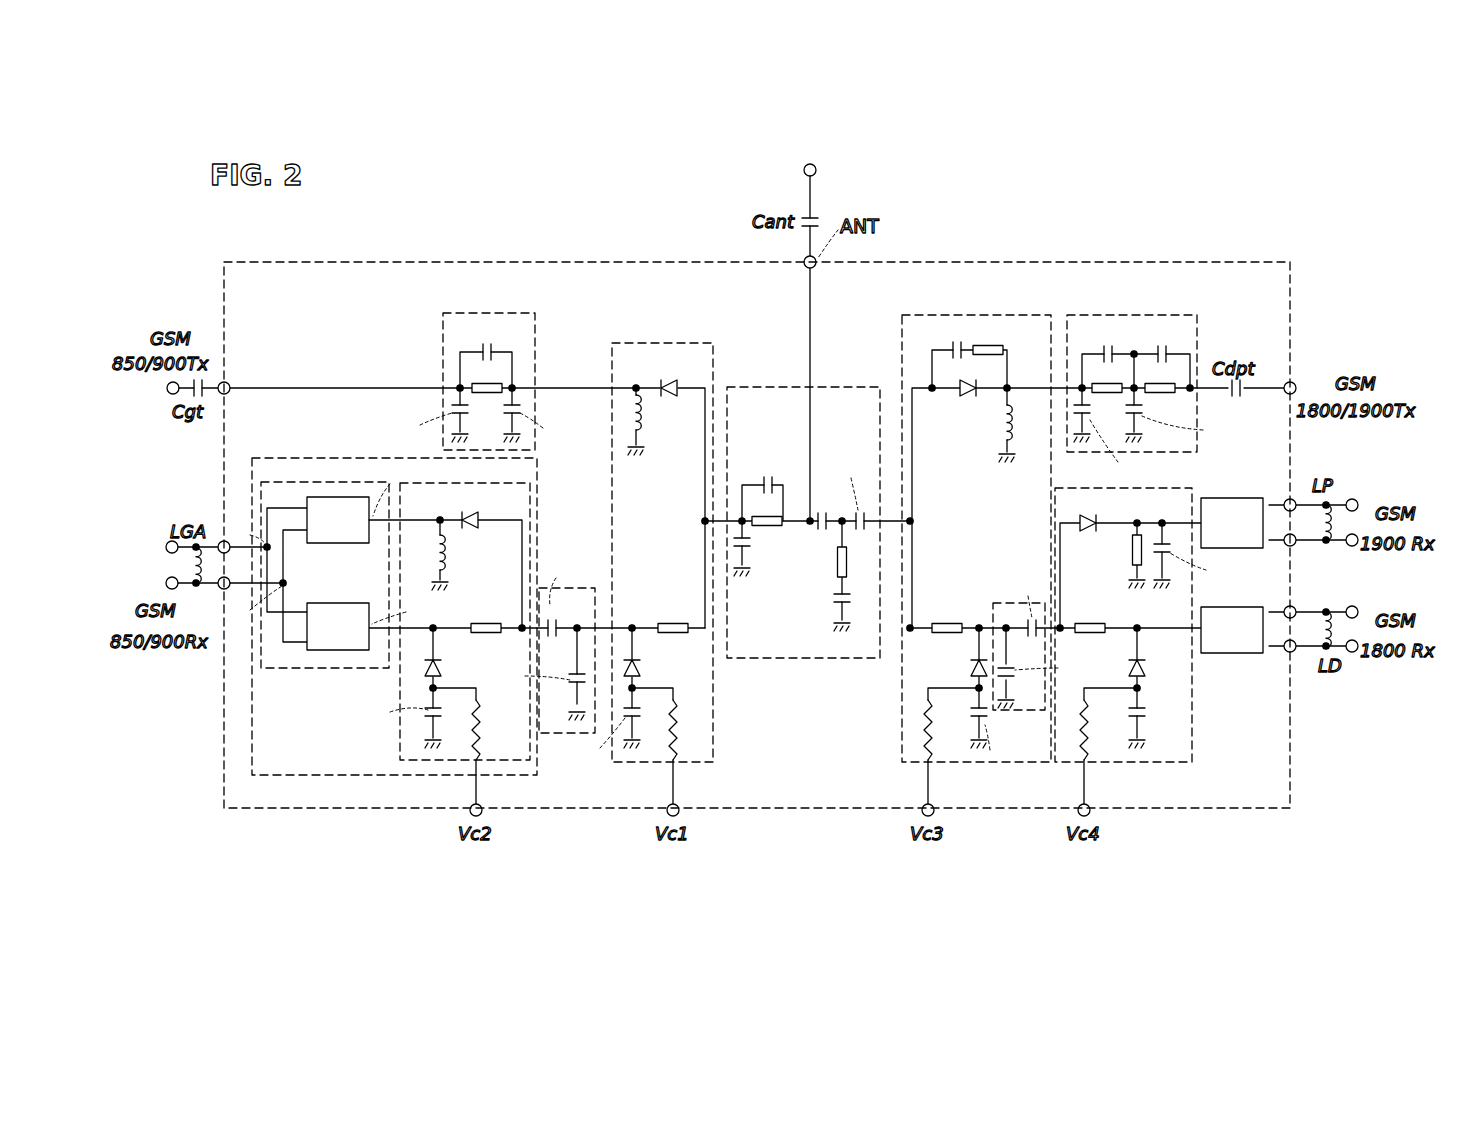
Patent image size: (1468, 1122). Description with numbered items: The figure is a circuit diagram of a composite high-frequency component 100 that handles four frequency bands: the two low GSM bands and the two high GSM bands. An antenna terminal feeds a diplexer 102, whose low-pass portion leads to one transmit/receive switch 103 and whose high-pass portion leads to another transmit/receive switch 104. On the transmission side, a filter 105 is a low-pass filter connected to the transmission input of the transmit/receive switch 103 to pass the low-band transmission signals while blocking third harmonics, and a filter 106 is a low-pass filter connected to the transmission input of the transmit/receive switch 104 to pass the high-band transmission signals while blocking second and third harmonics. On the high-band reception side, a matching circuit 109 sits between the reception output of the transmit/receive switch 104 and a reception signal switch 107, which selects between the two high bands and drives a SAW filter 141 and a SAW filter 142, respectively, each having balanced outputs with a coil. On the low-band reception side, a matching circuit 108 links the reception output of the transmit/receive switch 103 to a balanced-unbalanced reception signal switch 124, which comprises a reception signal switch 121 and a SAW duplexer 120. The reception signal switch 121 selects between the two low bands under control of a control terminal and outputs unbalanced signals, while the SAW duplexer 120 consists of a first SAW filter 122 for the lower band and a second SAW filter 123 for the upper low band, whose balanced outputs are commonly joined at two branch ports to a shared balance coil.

The composite high-frequency component 100 is at (1287, 262).
The diplexer 102 is at (820, 387).
The transmit/receive switch 103 is at (713, 346).
The transmit/receive switch 104 is at (1051, 317).
The filter 105 is at (535, 316).
The filter 106 is at (1190, 317).
The reception signal switch 107 is at (1192, 763).
The matching circuit 108 is at (595, 588).
The matching circuit 109 is at (1040, 603).
The SAW duplexer 120 is at (260, 482).
The reception signal switch 121 is at (400, 760).
The first SAW filter 122 is at (333, 497).
The second SAW filter 123 is at (333, 668).
The balanced-unbalanced reception signal switch 124 is at (250, 778).
The SAW filter 141 is at (1225, 498).
The SAW filter 142 is at (1220, 654).